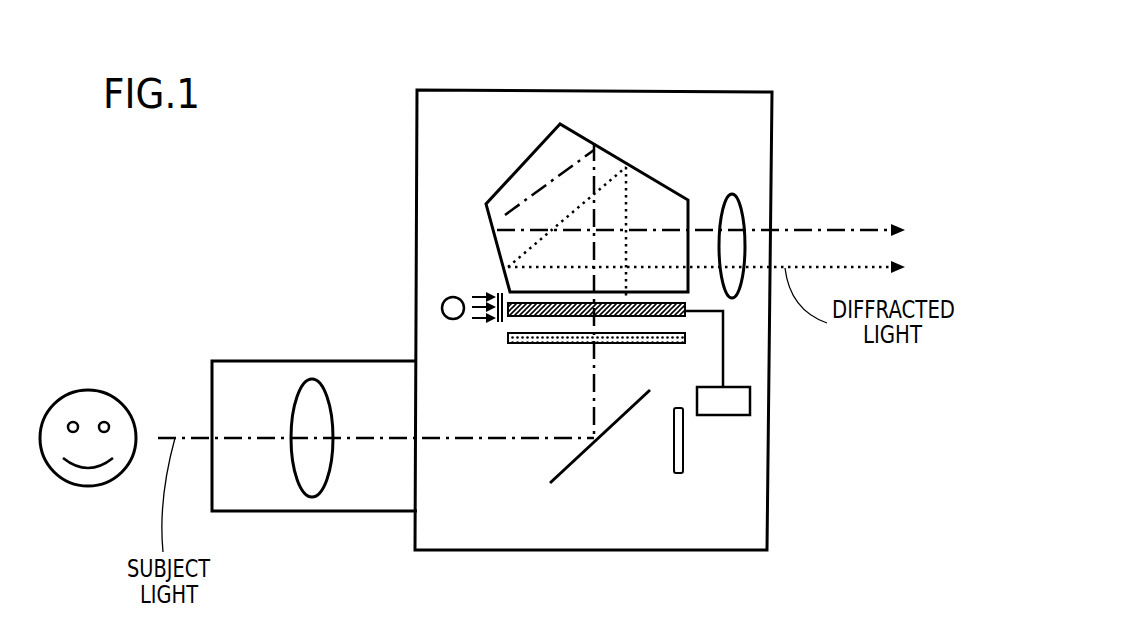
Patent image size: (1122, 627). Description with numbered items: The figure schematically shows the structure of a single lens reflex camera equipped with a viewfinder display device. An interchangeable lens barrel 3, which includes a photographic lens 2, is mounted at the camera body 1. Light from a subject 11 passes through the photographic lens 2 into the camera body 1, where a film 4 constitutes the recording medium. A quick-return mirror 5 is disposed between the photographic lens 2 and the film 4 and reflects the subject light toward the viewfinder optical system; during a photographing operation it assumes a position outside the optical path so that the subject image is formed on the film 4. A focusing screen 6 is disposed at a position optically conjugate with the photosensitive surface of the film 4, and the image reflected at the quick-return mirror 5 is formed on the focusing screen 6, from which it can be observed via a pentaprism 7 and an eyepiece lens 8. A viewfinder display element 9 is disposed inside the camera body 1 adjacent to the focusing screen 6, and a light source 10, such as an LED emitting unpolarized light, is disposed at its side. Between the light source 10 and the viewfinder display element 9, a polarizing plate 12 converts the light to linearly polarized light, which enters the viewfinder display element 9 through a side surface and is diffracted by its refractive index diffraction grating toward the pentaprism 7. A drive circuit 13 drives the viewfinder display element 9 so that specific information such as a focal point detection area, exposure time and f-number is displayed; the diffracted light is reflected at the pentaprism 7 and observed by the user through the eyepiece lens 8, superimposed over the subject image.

The camera body 1 is at (415, 112).
The photographic lens 2 is at (302, 497).
The interchangeable lens barrel 3 is at (212, 361).
The film 4 is at (685, 470).
The quick-return mirror 5 is at (563, 473).
The focusing screen 6 is at (510, 343).
The pentaprism 7 is at (577, 130).
The eyepiece lens 8 is at (732, 194).
The viewfinder display element 9 is at (682, 318).
The light source 10 is at (443, 298).
The subject 11 is at (80, 397).
The polarizing plate 12 is at (500, 292).
The drive circuit 13 is at (710, 415).